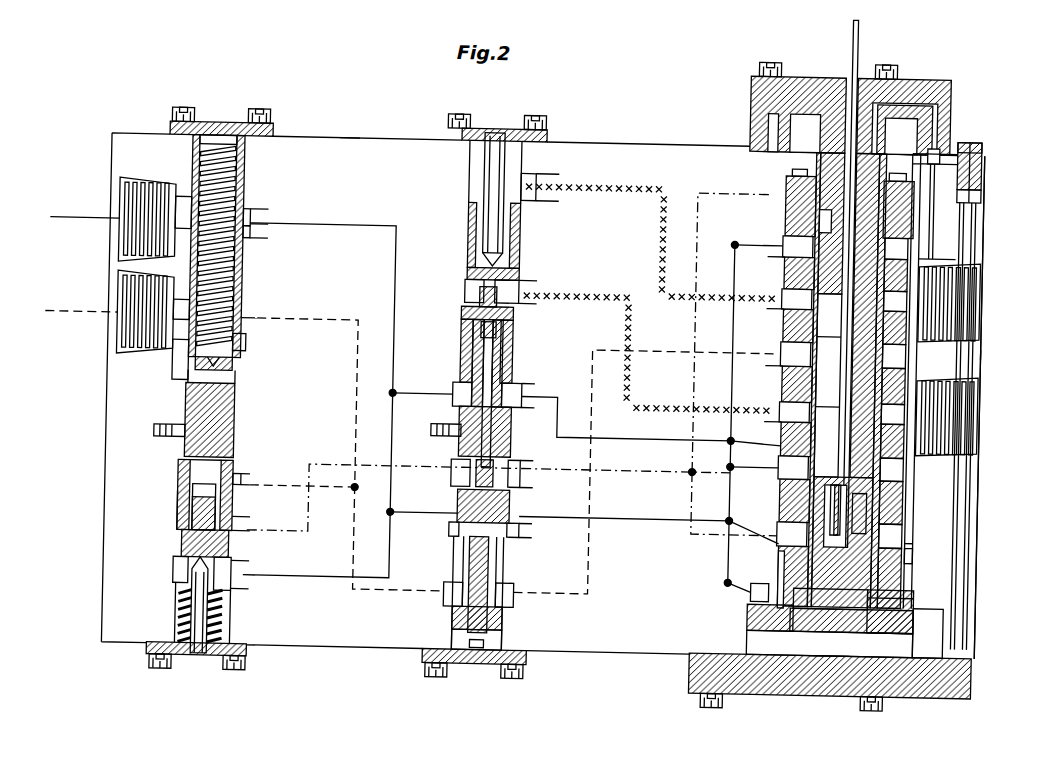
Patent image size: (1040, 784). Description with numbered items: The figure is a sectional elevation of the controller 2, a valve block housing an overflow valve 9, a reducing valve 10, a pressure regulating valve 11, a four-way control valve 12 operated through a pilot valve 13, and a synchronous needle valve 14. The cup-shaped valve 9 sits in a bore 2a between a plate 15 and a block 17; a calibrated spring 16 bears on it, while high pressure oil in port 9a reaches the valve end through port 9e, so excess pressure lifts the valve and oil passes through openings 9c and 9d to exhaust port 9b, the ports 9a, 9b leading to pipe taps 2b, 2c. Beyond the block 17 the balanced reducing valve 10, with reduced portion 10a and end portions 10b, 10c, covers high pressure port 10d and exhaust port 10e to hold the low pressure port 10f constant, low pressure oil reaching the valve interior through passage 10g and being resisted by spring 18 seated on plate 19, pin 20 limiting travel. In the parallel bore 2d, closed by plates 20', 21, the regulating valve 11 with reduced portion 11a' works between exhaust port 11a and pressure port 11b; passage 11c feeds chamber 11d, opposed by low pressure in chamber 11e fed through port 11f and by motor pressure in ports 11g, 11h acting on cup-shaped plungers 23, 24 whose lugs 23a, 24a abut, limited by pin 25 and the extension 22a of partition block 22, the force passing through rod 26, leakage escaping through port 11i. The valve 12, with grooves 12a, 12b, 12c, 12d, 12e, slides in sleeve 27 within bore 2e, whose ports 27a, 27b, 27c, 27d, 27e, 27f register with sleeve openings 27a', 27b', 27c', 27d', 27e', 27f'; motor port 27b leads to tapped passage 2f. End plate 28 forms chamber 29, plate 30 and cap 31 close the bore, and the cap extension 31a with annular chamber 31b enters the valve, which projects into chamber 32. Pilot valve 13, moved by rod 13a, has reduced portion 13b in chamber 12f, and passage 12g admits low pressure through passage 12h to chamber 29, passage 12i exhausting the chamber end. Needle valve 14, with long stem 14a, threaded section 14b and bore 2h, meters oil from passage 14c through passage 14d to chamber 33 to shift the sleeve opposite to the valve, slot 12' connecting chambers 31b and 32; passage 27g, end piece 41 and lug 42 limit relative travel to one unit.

The controller 2 is at (348, 141).
The bore 2a is at (203, 146).
The pipe tap 2b is at (126, 305).
The pipe tap 2c is at (126, 212).
The bore 2d is at (470, 162).
The bore 2e is at (916, 555).
The tapped passage 2f is at (980, 290).
The passage 2h is at (970, 250).
The overflow valve 9 is at (245, 278).
The high pressure port 9a is at (248, 312).
The exhaust port 9b is at (252, 240).
The openings 9c is at (250, 348).
The openings 9d is at (252, 222).
The port 9e is at (185, 386).
The reducing valve 10 is at (192, 550).
The reduced central portion 10a is at (186, 518).
The end portion 10b is at (240, 586).
The end portion 10c is at (240, 470).
The high pressure port 10d is at (185, 490).
The exhaust port 10e is at (183, 578).
The low pressure port 10f is at (242, 532).
The diametral passage 10g is at (224, 524).
The pressure regulating valve 11 is at (465, 516).
The exhaust port 11a is at (591, 531).
The reduced central portion 11a' is at (510, 593).
The pressure port 11b is at (456, 592).
The passage 11c is at (465, 617).
The chamber 11d is at (485, 650).
The chamber 11e is at (518, 485).
The port 11f is at (460, 480).
The port 11g is at (538, 175).
The port 11h is at (524, 284).
The port 11i is at (460, 386).
The four-way control valve 12 is at (845, 380).
The slot 12' is at (997, 165).
The groove 12a is at (787, 190).
The groove 12b is at (834, 378).
The groove 12c is at (834, 345).
The groove 12d is at (834, 419).
The groove 12e is at (832, 490).
The valve chamber 12f is at (876, 492).
The passage 12g is at (790, 560).
The passage 12h is at (760, 582).
The exhaust passage 12i is at (912, 527).
The pilot valve 13 is at (860, 505).
The valve rod 13a is at (857, 22).
The reduced portion 13b is at (846, 490).
The advancing valve 14 is at (985, 615).
The stem 14a is at (965, 355).
The threaded section 14b is at (962, 133).
The passage 14c is at (900, 100).
The passage 14d is at (950, 649).
The plate 15 is at (218, 128).
The calibrated spring 16 is at (232, 172).
The block 17 is at (240, 422).
The spring 18 is at (190, 620).
The plate 19 is at (240, 661).
The abutment pin 20 is at (174, 604).
The plate 20' is at (477, 675).
The plate 21 is at (484, 129).
The stationary block 22 is at (517, 432).
The reduced extension 22a is at (505, 388).
The plunger 23 is at (522, 235).
The lug 23a is at (470, 290).
The plunger 24 is at (518, 313).
The lug 24a is at (484, 298).
The abutment pin 25 is at (505, 160).
The rod 26 is at (498, 340).
The valve sleeve 27 is at (978, 575).
The exhaust port 27a is at (759, 238).
The openings 27a' is at (759, 262).
The motor port 27b is at (756, 310).
The openings 27b' is at (775, 290).
The high pressure port 27c is at (756, 358).
The openings 27c' is at (773, 342).
The motor port 27d is at (758, 407).
The openings 27d' is at (773, 393).
The exhaust port 27e is at (755, 452).
The openings 27e' is at (769, 444).
The low pressure port 27f is at (754, 523).
The openings 27f' is at (750, 503).
The passage 27g is at (772, 606).
The end plate 28 is at (876, 590).
The chamber 29 is at (983, 405).
The plate 30 is at (796, 660).
The cap 31 is at (822, 80).
The axial extension 31a is at (861, 315).
The annular chamber 31b is at (821, 214).
The chamber 32 is at (780, 128).
The chamber 33 is at (850, 652).
The annular end piece 41 is at (982, 160).
The lug 42 is at (816, 588).